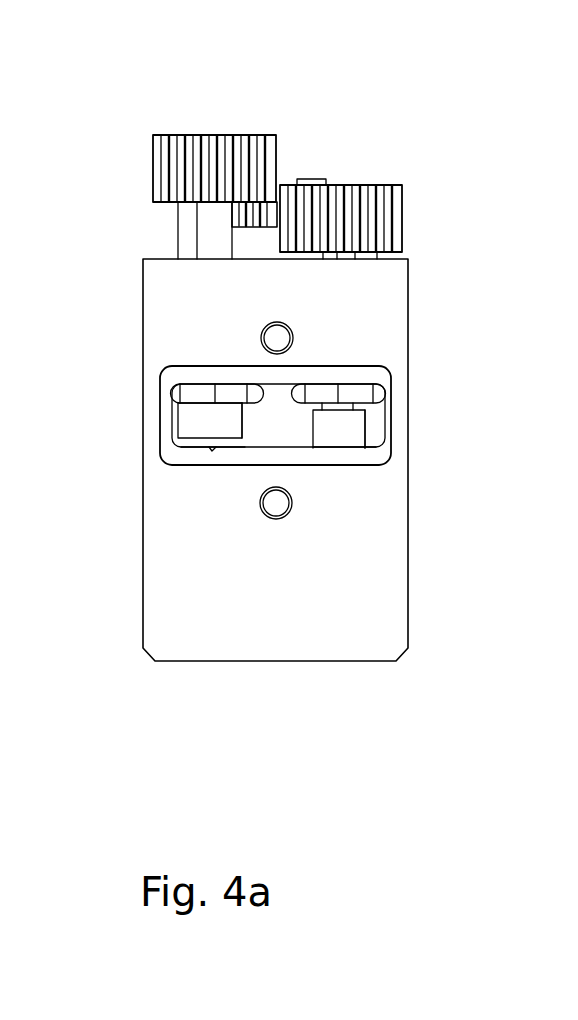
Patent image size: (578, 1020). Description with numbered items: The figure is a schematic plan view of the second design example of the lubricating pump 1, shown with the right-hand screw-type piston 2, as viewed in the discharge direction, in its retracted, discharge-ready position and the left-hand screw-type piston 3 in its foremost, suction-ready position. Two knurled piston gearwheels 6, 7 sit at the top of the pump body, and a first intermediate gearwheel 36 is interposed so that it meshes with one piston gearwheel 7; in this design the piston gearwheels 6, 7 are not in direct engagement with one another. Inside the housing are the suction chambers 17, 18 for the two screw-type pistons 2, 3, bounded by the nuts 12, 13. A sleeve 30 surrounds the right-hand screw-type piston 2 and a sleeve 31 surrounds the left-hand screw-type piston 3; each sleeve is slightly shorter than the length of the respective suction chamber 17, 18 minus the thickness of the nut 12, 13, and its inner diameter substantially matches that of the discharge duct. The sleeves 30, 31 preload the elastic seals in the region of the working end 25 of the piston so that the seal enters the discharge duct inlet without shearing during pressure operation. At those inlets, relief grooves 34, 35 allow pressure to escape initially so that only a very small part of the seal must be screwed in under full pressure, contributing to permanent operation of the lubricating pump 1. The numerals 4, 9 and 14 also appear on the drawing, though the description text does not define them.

The lubricating pump 1 is at (147, 718).
The right-hand screw-type piston 2 is at (210, 228).
The left-hand screw-type piston 3 is at (342, 253).
The adjusting unit 4 is at (318, 77).
The piston gearwheel 6 is at (167, 167).
The piston gearwheel 7 is at (388, 222).
The second clamping bar 9 is at (353, 416).
The nut 12 is at (228, 383).
The nut 13 is at (372, 387).
The housing 14 is at (343, 636).
The suction chamber 17 is at (186, 426).
The suction chamber 18 is at (379, 425).
The working end 25 is at (237, 437).
The sleeve 30 is at (228, 415).
The sleeve 31 is at (330, 432).
The relief groove 34 is at (213, 464).
The relief groove 35 is at (342, 462).
The first intermediate gearwheel 36 is at (297, 181).